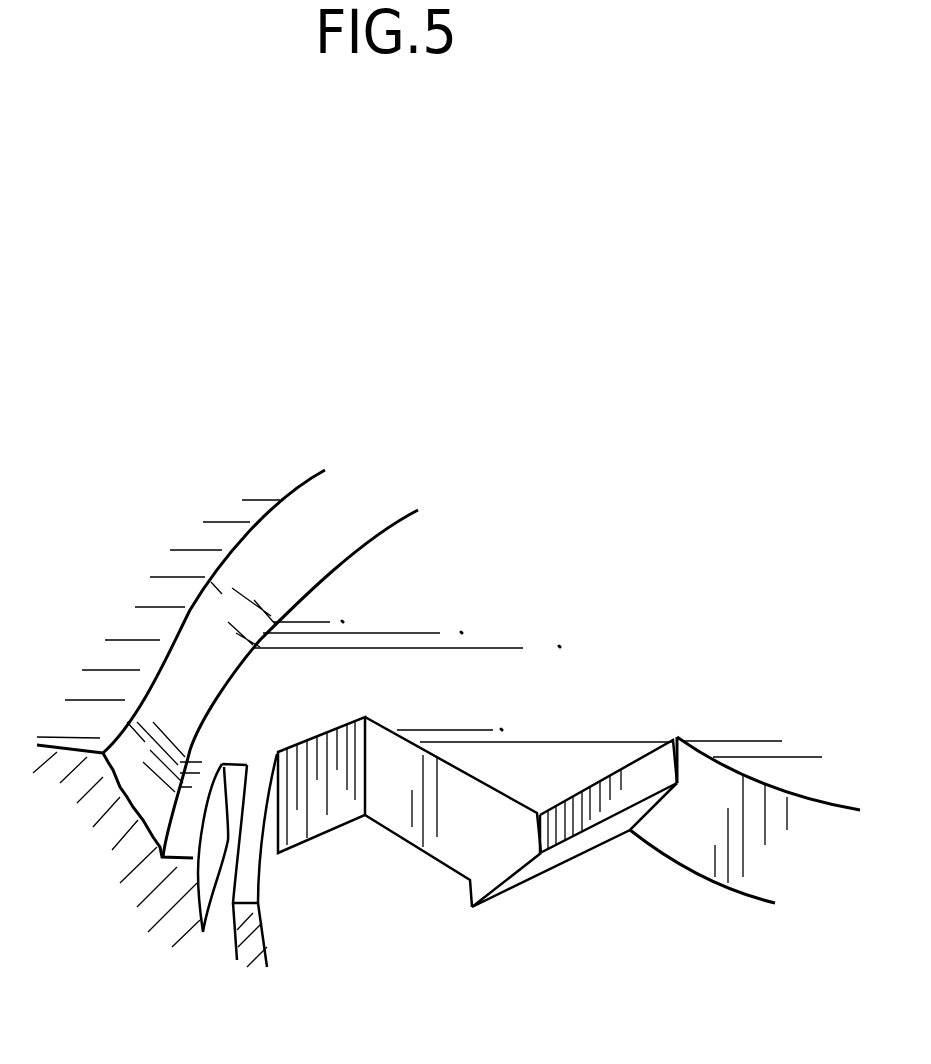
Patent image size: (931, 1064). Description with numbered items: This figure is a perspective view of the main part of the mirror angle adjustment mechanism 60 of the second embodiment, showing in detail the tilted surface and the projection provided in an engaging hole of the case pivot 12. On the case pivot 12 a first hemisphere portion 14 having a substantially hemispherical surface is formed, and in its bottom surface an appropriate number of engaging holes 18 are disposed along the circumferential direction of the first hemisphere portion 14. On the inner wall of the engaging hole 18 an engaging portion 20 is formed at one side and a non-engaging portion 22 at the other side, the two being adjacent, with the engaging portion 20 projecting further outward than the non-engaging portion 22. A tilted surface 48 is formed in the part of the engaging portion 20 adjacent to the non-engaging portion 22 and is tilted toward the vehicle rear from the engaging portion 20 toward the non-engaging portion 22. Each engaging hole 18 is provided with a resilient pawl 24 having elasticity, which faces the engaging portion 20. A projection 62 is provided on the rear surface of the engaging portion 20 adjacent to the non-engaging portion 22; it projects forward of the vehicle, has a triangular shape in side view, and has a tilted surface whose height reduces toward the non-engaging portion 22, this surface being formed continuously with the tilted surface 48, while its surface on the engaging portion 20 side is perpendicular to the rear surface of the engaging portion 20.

The case pivot 12 is at (471, 358).
The mirror angle adjustment mechanism 60 is at (446, 766).
The first hemisphere portion 14 is at (185, 691).
The engaging hole 18 is at (380, 887).
The engaging portion 20 is at (462, 850).
The non-engaging portion 22 is at (685, 838).
The resilient pawl 24 is at (247, 885).
The tilted surface 48 is at (575, 850).
The projection 62 is at (470, 912).